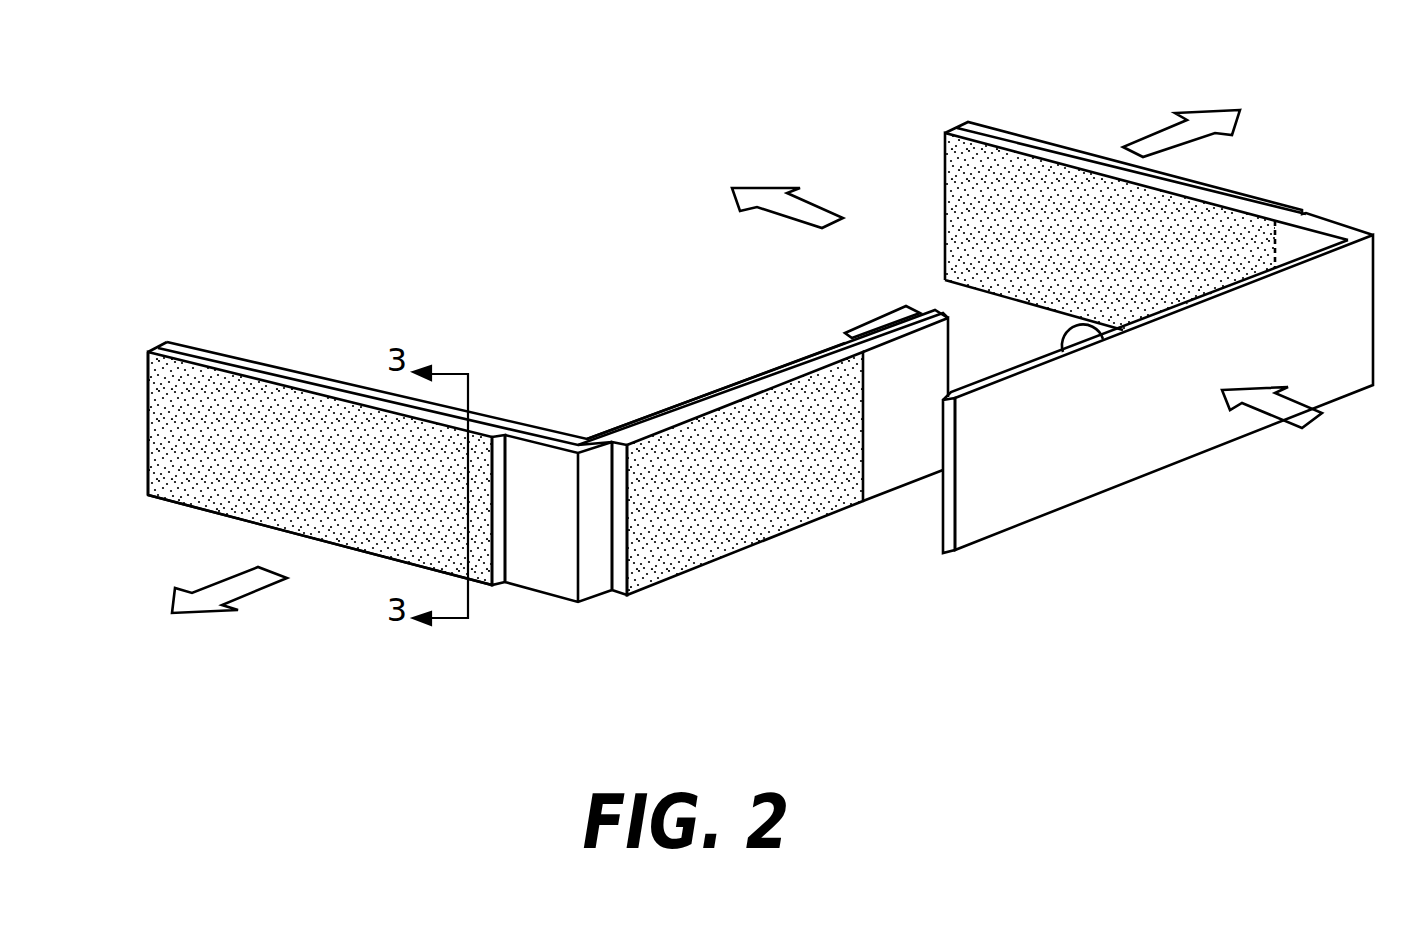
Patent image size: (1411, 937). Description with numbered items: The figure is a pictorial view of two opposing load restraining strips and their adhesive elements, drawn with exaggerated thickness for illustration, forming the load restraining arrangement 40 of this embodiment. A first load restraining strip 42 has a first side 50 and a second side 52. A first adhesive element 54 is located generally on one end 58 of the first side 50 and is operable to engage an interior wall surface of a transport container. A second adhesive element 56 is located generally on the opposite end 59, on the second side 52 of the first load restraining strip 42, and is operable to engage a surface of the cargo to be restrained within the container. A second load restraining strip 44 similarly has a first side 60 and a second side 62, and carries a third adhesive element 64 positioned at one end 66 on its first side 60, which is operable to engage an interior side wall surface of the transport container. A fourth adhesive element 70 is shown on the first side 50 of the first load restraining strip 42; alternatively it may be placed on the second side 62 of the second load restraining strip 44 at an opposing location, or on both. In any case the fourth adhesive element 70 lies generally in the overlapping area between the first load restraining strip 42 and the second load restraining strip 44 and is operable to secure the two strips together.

The panel assembly 40 is at (1292, 603).
The first load restraining strip 42 is at (165, 330).
The second load restraining strip 44 is at (950, 118).
The first side 50 is at (543, 582).
The second side 52 is at (565, 438).
The first adhesive element 54 is at (188, 498).
The second adhesive element 56 is at (834, 326).
The one end 58 is at (148, 387).
The opposite end 59 is at (921, 311).
The first side 60 is at (1132, 455).
The second side 62 is at (1097, 347).
The third adhesive element 64 is at (1242, 190).
The one end 66 is at (945, 186).
The fourth adhesive element 70 is at (772, 525).